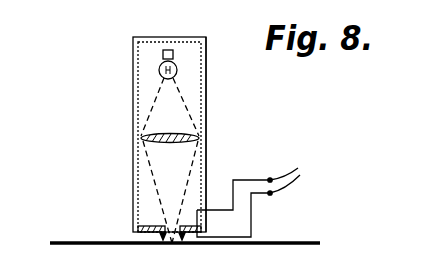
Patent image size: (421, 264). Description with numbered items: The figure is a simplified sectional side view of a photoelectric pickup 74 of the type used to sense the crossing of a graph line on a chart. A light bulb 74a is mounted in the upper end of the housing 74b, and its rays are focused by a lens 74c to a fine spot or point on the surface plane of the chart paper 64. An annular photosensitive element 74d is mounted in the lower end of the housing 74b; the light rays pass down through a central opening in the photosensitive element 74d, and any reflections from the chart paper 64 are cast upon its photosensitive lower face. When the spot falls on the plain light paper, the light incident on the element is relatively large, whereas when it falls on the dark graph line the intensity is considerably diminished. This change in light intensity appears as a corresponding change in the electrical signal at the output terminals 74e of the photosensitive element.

The chart paper 64 is at (82, 235).
The photoelectric pickup 74 is at (113, 148).
The light bulb 74a is at (159, 70).
The housing 74b is at (207, 91).
The lens 74c is at (197, 143).
The annular photosensitive element 74d is at (147, 226).
The output terminals 74e is at (298, 168).